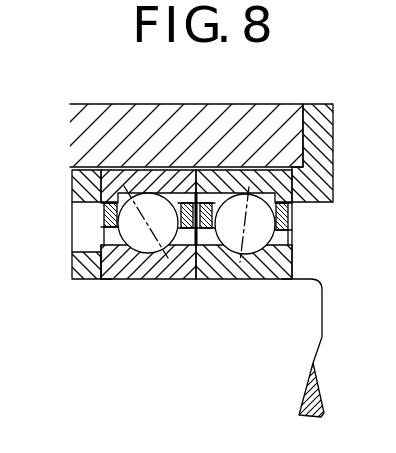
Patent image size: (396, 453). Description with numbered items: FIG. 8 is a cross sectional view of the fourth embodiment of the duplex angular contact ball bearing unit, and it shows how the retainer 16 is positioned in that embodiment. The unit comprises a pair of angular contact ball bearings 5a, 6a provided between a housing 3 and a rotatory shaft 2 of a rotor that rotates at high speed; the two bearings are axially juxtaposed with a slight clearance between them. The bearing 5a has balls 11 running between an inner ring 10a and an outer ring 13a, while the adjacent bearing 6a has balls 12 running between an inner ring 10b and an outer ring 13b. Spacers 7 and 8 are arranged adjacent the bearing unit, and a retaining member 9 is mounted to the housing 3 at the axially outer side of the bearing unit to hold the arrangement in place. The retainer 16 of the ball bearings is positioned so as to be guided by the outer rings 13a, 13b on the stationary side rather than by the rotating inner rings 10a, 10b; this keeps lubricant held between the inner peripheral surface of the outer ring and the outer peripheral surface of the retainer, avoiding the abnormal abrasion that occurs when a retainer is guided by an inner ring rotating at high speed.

The rotatory shaft 2 is at (314, 340).
The housing 3 is at (88, 110).
The bearing 5a is at (163, 280).
The bearing 6a is at (261, 281).
The spacer 7 is at (73, 268).
The spacer 8 is at (73, 190).
The retaining member 9 is at (326, 153).
The inner ring 10a is at (97, 279).
The inner ring 10b is at (289, 264).
The balls 11 is at (125, 256).
The balls 12 is at (229, 248).
The outer ring 13a is at (143, 177).
The outer ring 13b is at (240, 177).
The retainer 16 is at (104, 221).